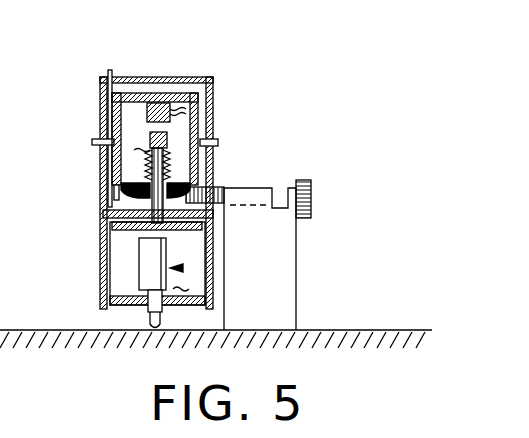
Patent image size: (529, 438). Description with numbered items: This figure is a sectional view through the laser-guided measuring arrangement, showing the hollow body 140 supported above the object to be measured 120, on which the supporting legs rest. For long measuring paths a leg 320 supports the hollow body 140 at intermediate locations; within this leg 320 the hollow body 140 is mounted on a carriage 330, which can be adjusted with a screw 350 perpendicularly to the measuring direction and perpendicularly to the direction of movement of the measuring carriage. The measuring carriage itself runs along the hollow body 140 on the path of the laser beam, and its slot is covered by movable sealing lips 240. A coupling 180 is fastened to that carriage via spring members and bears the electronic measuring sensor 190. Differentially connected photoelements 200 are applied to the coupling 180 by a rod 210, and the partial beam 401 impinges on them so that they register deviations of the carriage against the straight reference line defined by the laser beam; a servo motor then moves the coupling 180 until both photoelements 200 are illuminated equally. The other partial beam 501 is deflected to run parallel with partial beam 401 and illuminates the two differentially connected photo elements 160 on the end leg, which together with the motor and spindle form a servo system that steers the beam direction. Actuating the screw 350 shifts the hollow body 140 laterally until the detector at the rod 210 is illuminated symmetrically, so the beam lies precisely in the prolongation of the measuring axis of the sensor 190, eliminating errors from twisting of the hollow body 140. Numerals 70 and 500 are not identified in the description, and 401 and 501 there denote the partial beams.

The outer housing 70 is at (215, 78).
The partial beam 501 is at (100, 103).
The partial beam 401 is at (100, 158).
The hollow body 140 is at (213, 108).
The photo elements 160 is at (184, 106).
The photoelements 200 is at (185, 132).
The rod 210 is at (213, 186).
The carriage 330 is at (224, 188).
The sealing lips 240 is at (100, 212).
The coupling 180 is at (210, 220).
The electronic measuring sensor 190 is at (183, 268).
The probe tip 500 is at (150, 325).
The leg 320 is at (287, 237).
The screw 350 is at (312, 202).
The object to be measured 120 is at (407, 323).